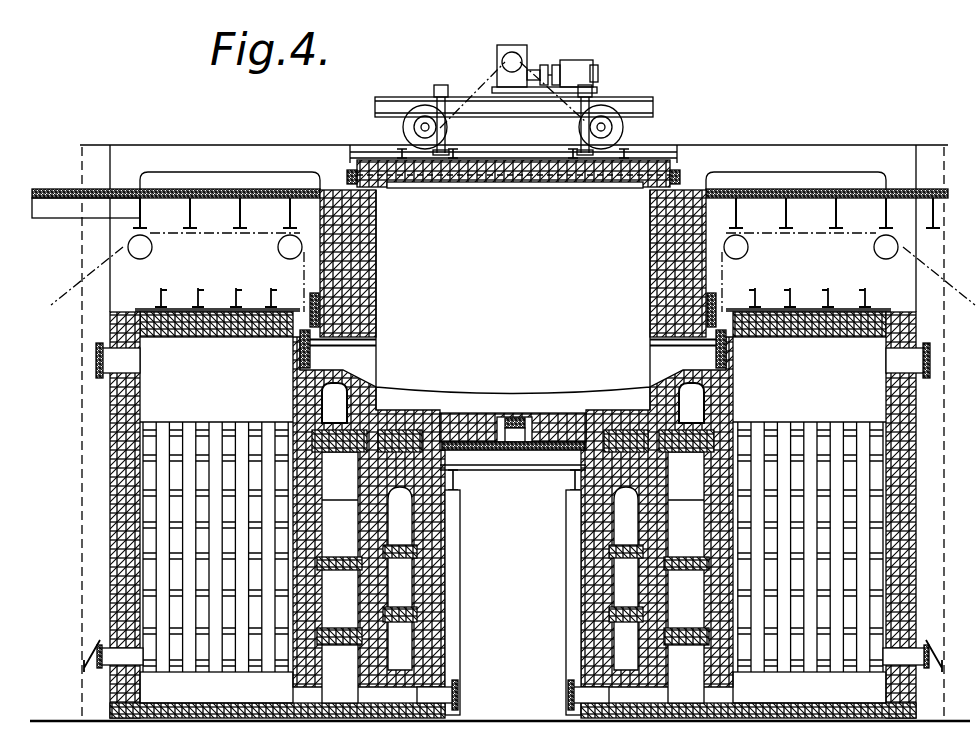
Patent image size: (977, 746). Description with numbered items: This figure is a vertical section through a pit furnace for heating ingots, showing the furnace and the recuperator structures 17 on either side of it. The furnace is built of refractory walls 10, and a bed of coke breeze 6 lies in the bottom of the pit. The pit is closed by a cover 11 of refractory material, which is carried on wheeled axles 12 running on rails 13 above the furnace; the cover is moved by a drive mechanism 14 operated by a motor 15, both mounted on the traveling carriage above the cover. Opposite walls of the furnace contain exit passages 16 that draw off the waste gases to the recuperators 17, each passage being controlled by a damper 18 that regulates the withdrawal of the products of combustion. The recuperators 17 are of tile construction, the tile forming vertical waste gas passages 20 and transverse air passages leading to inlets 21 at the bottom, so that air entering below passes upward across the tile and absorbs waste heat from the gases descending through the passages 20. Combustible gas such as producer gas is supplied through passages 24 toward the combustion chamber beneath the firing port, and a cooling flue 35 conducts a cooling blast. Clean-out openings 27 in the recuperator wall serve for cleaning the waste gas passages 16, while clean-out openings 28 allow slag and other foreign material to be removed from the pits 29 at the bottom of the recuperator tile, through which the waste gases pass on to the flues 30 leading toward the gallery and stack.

The bed of coke breeze 6 is at (465, 395).
The refractory walls 10 is at (372, 277).
The cover 11 is at (513, 184).
The wheeled axles 12 is at (623, 128).
The rails 13 is at (736, 147).
The drive mechanism 14 is at (522, 56).
The motor 15 is at (586, 62).
The exit passages 16 is at (513, 355).
The recuperator structures 17 is at (513, 534).
The dampers 18 is at (727, 352).
The vertical waste gas passages 20 is at (828, 428).
The inlets 21 is at (86, 664).
The passages 24 is at (513, 550).
The clean-out openings 27 is at (93, 362).
The clean-out openings 28 is at (570, 694).
The pits 29 is at (513, 688).
The flues 30 is at (513, 566).
The cooling flue 35 is at (513, 403).